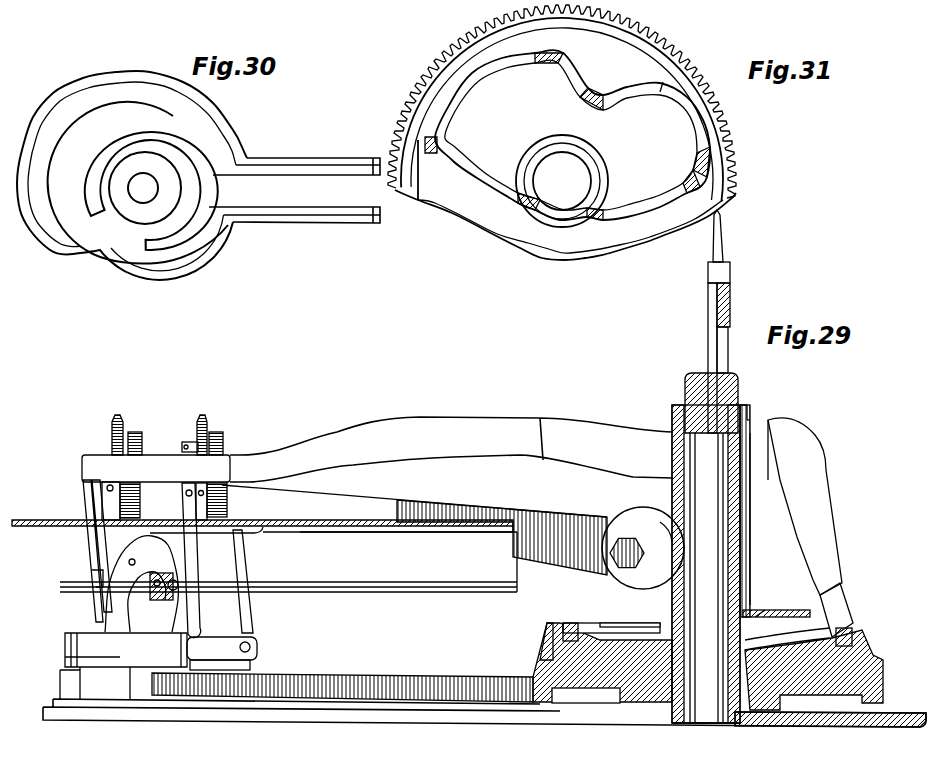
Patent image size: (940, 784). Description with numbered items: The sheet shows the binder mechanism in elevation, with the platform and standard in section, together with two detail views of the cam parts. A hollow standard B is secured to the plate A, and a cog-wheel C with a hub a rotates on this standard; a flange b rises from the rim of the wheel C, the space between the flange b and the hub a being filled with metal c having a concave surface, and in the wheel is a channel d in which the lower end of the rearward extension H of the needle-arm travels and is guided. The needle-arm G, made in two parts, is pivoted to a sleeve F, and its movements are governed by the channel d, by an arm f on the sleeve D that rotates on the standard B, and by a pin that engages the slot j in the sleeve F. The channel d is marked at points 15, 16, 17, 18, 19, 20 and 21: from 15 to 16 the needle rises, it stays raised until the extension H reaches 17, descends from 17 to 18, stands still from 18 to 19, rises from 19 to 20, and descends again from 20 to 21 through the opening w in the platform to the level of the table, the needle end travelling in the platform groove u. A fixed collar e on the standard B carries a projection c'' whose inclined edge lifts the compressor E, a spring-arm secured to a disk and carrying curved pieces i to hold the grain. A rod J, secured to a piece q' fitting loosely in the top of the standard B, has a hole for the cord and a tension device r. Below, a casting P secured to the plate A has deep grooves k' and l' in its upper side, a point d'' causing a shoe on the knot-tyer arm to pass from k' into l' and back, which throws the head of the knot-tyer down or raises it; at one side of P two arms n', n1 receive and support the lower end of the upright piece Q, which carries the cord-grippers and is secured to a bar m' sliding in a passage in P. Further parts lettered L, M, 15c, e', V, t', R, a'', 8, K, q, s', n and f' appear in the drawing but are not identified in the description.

In FIG. 30, the groove k' is at (132, 175).
In FIG. 30, the groove l' is at (151, 191).
In FIG. 30, the point d'' is at (124, 239).
In FIG. 30, the casting P is at (101, 265).
In FIG. 29, the casting P is at (123, 666).
In FIG. 30, the arm n1 is at (296, 159).
In FIG. 30, the arms n' is at (294, 223).
In FIG. 29, the arms n' is at (222, 648).
In FIG. 31, the cog-wheel C is at (572, 103).
In FIG. 31, the channel d is at (565, 180).
In FIG. 29, the channel d is at (611, 620).
In FIG. 31, the metal filling c is at (581, 181).
In FIG. 29, the metal filling c is at (814, 670).
In FIG. 31, the point in channel d 21 is at (572, 128).
In FIG. 31, the point in channel d 20 is at (595, 91).
In FIG. 31, the point in channel d 19 is at (656, 98).
In FIG. 29, the point in channel d 19 is at (787, 634).
In FIG. 31, the point in channel d 15 is at (438, 144).
In FIG. 31, the flange b is at (703, 156).
In FIG. 31, the point in channel d 18 is at (696, 182).
In FIG. 29, the point in channel d 18 is at (853, 630).
In FIG. 31, the point in channel d 16 is at (529, 211).
In FIG. 31, the point in channel d 17 is at (596, 220).
In FIG. 29, the plate A is at (484, 721).
In FIG. 29, the rack L is at (342, 680).
In FIG. 29, the block M is at (592, 663).
In FIG. 29, the rod 15c is at (621, 614).
In FIG. 29, the bracket e' is at (595, 643).
In FIG. 29, the fixed collar e is at (700, 735).
In FIG. 29, the hub a is at (750, 730).
In FIG. 29, the bar m' is at (220, 669).
In FIG. 29, the lever V is at (243, 581).
In FIG. 29, the upright piece Q is at (202, 560).
In FIG. 29, the lever t' is at (87, 551).
In FIG. 29, the block R is at (141, 584).
In FIG. 29, the piece of metal q' is at (175, 593).
In FIG. 29, the pin a'' is at (161, 574).
In FIG. 29, the opening w is at (206, 520).
In FIG. 29, the needle plate 8 is at (243, 518).
In FIG. 29, the bar K is at (288, 559).
In FIG. 29, the groove u is at (406, 541).
In FIG. 29, the compressor E is at (414, 530).
In FIG. 29, the curved pieces i is at (156, 463).
In FIG. 29, the needle-arm G is at (451, 449).
In FIG. 29, the rod J is at (643, 548).
In FIG. 29, the standard B is at (706, 564).
In FIG. 29, the cap q is at (718, 400).
In FIG. 29, the tension device r is at (732, 298).
In FIG. 29, the rod s' is at (701, 358).
In FIG. 29, the arm f is at (731, 350).
In FIG. 29, the collar n is at (754, 401).
In FIG. 29, the slot j is at (755, 415).
In FIG. 29, the sleeve F is at (748, 511).
In FIG. 29, the rearward extension H is at (810, 527).
In FIG. 29, the sleeve D is at (752, 570).
In FIG. 29, the pin f' is at (764, 601).
In FIG. 29, the projection c'' is at (776, 602).